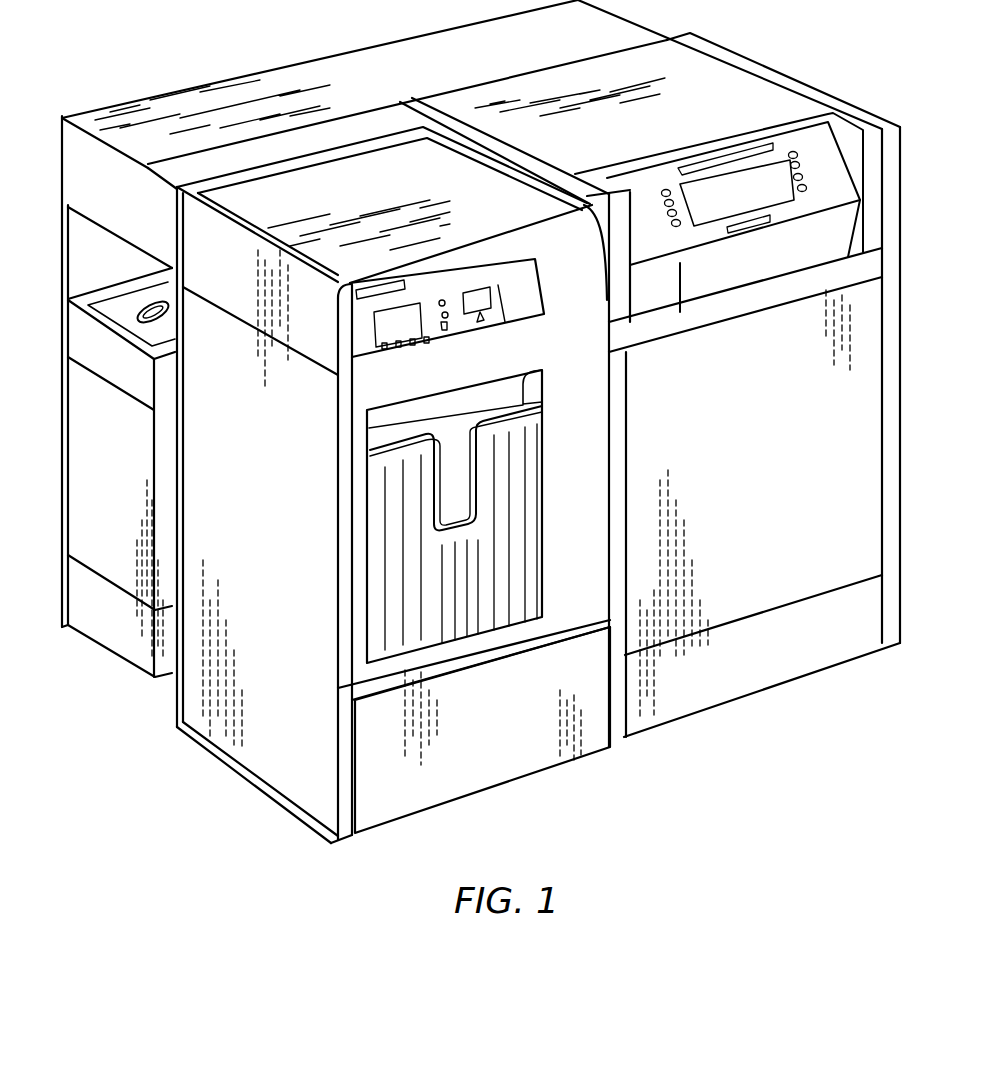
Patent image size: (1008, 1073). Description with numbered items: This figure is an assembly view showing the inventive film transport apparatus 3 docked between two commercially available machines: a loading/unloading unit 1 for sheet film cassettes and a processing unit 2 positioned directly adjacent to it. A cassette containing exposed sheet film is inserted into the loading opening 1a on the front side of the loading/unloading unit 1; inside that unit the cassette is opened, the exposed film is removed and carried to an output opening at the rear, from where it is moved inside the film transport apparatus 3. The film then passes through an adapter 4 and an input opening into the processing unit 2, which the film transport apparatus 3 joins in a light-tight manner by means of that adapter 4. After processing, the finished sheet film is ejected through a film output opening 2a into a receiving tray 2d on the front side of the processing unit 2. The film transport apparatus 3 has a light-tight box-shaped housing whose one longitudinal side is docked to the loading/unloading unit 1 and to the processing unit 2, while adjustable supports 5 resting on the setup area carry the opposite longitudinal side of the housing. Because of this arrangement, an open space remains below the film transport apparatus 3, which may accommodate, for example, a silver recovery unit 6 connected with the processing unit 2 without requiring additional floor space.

The loading/unloading unit 1 is at (757, 620).
The loading opening 1a is at (755, 277).
The processing unit 2 is at (273, 768).
The film output opening 2a is at (412, 408).
The receiving tray 2d is at (472, 476).
The film transport apparatus 3 is at (317, 133).
The adapter 4 is at (182, 123).
The adjustable supports 5 is at (62, 517).
The silver recovery unit 6 is at (156, 556).